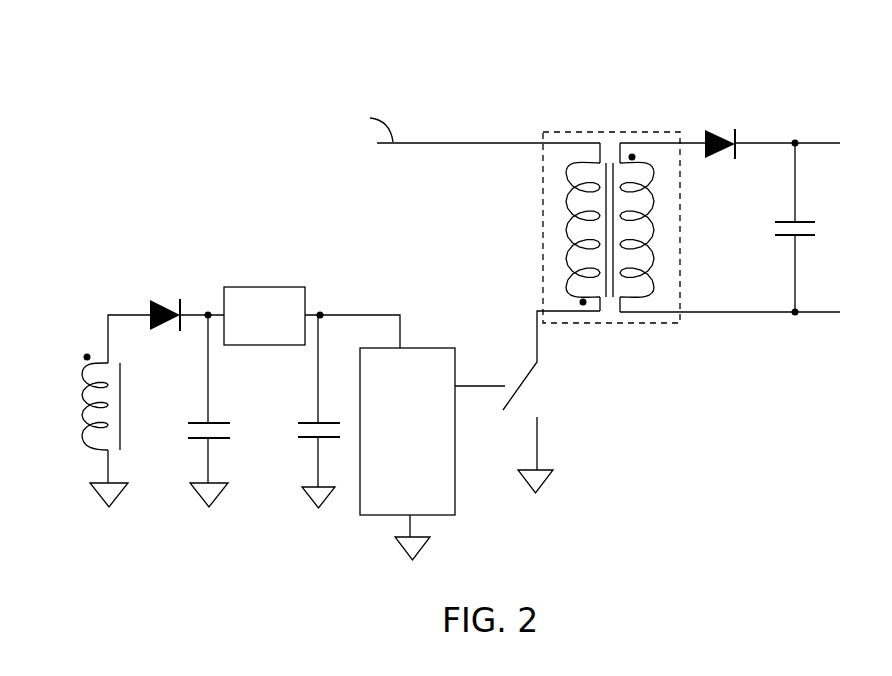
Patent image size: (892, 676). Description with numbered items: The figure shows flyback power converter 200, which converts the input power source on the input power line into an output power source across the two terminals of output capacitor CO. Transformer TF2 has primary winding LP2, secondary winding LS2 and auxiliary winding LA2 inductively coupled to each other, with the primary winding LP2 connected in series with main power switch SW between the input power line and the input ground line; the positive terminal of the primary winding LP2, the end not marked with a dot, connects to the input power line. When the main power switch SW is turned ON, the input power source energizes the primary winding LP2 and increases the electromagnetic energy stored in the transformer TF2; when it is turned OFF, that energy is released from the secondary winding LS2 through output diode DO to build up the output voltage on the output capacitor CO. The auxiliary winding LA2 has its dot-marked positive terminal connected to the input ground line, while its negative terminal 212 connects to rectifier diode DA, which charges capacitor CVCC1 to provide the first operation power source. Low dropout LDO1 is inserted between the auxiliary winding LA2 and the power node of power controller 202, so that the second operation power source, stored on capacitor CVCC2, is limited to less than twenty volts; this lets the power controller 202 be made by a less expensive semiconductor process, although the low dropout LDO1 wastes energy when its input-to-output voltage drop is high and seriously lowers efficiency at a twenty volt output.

The flyback power converter 200 is at (283, 93).
The power controller 202 is at (427, 487).
The negative terminal of auxiliary winding LA2 212 is at (107, 338).
The auxiliary winding LA2 is at (83, 368).
The rectifier diode DA is at (186, 305).
The low dropout LDO1 is at (292, 327).
The capacitor CVCC1 is at (192, 424).
The capacitor CVCC2 is at (302, 424).
The transformer TF2 is at (617, 130).
The primary winding LP2 is at (565, 230).
The secondary winding LS2 is at (655, 260).
The main power switch SW is at (542, 392).
The output diode DO is at (777, 129).
The output capacitor CO is at (792, 229).